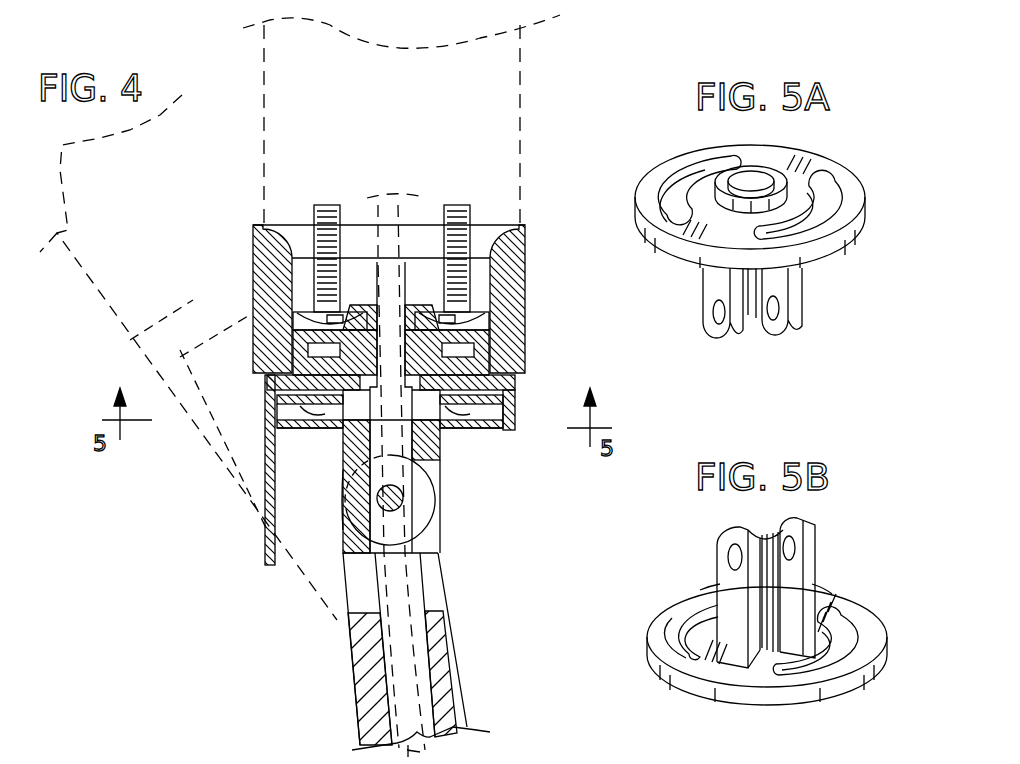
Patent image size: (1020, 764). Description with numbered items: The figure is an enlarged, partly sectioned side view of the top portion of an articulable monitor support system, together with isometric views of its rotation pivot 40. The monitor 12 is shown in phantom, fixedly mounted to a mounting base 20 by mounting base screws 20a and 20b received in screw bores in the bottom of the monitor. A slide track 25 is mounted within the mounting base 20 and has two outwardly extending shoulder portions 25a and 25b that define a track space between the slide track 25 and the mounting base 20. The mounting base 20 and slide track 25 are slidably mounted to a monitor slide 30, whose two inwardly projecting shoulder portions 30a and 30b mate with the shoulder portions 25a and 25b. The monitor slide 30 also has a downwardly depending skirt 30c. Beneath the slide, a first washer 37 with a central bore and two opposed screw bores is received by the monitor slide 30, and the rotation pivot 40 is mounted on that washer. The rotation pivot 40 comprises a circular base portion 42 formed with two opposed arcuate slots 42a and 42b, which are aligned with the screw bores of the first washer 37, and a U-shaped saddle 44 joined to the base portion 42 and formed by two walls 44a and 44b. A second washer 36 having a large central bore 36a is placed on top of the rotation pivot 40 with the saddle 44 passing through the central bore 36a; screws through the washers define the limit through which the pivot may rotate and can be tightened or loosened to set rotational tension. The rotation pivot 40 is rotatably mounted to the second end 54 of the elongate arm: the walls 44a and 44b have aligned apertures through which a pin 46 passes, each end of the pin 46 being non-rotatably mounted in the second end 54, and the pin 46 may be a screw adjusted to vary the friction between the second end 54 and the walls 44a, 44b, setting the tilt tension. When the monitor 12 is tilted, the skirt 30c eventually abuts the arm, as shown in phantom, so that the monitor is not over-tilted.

In FIG. 4, the monitor 12 is at (525, 100).
In FIG. 4, the mounting base 20 is at (525, 232).
In FIG. 4, the mounting base screw 20a is at (327, 205).
In FIG. 4, the mounting base screw 20b is at (457, 205).
In FIG. 4, the slide track 25 is at (450, 320).
In FIG. 4, the outwardly extending shoulder portion 25a is at (503, 405).
In FIG. 4, the outwardly extending shoulder portion 25b is at (320, 378).
In FIG. 4, the monitor slide 30 is at (515, 387).
In FIG. 4, the inwardly projecting shoulder portion 30a is at (487, 352).
In FIG. 4, the inwardly projecting shoulder portion 30b is at (330, 318).
In FIG. 4, the skirt 30c is at (265, 548).
In FIG. 4, the second washer 36 is at (283, 430).
In FIG. 4, the central bore 36a is at (447, 437).
In FIG. 4, the first washer 37 is at (300, 368).
In FIG. 4, the rotation pivot 40 is at (473, 420).
In FIG. 5A, the rotation pivot 40 is at (650, 185).
In FIG. 5B, the rotation pivot 40 is at (665, 622).
In FIG. 4, the circular base portion 42 is at (505, 420).
In FIG. 5A, the circular base portion 42 is at (847, 260).
In FIG. 5B, the circular base portion 42 is at (650, 652).
In FIG. 4, the arcuate slot 42a is at (470, 428).
In FIG. 5A, the arcuate slot 42a is at (840, 182).
In FIG. 5B, the arcuate slot 42a is at (705, 600).
In FIG. 4, the arcuate slot 42b is at (308, 428).
In FIG. 5A, the arcuate slot 42b is at (697, 165).
In FIG. 5B, the arcuate slot 42b is at (842, 615).
In FIG. 4, the U-shaped saddle 44 is at (343, 562).
In FIG. 5A, the U-shaped saddle 44 is at (703, 293).
In FIG. 5B, the U-shaped saddle 44 is at (815, 545).
In FIG. 5A, the wall 44a is at (725, 338).
In FIG. 5B, the wall 44a is at (800, 517).
In FIG. 4, the wall 44b is at (443, 477).
In FIG. 5A, the wall 44b is at (790, 333).
In FIG. 5B, the wall 44b is at (733, 527).
In FIG. 4, the pin 46 is at (385, 512).
In FIG. 4, the second end 54 is at (435, 540).